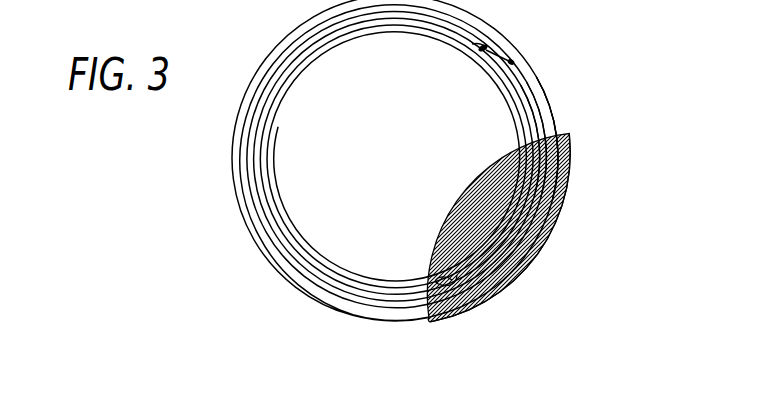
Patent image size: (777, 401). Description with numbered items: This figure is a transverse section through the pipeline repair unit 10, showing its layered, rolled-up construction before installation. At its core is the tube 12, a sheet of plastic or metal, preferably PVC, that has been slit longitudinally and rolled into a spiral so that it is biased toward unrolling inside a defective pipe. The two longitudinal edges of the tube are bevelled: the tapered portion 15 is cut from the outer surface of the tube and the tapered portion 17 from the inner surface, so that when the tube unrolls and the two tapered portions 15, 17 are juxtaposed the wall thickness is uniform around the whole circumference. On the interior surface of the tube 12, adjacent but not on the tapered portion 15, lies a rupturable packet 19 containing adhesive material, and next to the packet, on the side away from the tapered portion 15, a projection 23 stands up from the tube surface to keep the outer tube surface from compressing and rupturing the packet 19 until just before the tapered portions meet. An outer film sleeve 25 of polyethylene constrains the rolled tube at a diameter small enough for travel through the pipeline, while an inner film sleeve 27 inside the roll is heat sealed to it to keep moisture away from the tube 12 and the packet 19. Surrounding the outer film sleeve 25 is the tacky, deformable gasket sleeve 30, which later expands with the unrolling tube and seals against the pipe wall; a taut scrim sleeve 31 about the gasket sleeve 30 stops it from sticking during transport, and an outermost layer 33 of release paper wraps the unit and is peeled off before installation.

The pipeline repair unit 10 is at (672, 61).
The tube 12 is at (316, 256).
The tapered portion 15 is at (518, 64).
The tapered portion 17 is at (457, 275).
The rupturable packet 19 is at (483, 53).
The projection 23 is at (477, 47).
The outer film sleeve 25 is at (536, 80).
The inner film sleeve 27 is at (508, 95).
The gasket sleeve 30 is at (554, 108).
The scrim sleeve 31 is at (566, 185).
The layer of release paper 33 is at (553, 243).